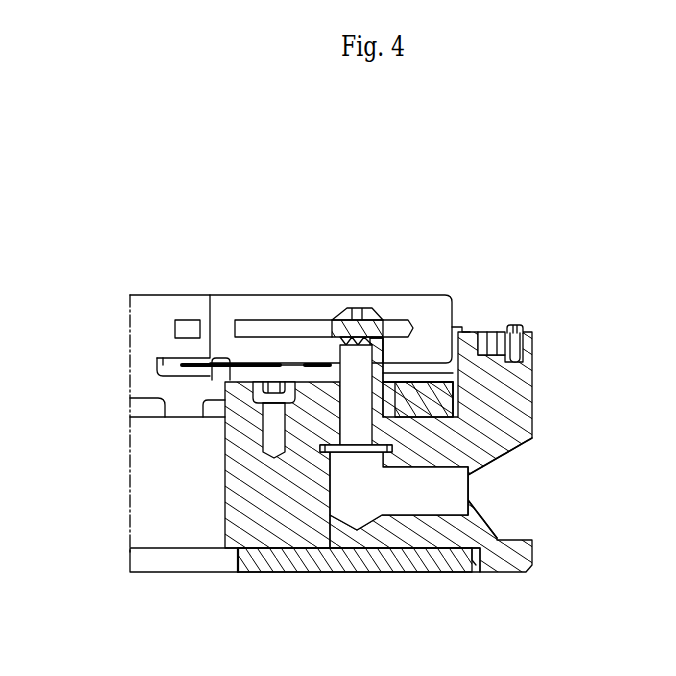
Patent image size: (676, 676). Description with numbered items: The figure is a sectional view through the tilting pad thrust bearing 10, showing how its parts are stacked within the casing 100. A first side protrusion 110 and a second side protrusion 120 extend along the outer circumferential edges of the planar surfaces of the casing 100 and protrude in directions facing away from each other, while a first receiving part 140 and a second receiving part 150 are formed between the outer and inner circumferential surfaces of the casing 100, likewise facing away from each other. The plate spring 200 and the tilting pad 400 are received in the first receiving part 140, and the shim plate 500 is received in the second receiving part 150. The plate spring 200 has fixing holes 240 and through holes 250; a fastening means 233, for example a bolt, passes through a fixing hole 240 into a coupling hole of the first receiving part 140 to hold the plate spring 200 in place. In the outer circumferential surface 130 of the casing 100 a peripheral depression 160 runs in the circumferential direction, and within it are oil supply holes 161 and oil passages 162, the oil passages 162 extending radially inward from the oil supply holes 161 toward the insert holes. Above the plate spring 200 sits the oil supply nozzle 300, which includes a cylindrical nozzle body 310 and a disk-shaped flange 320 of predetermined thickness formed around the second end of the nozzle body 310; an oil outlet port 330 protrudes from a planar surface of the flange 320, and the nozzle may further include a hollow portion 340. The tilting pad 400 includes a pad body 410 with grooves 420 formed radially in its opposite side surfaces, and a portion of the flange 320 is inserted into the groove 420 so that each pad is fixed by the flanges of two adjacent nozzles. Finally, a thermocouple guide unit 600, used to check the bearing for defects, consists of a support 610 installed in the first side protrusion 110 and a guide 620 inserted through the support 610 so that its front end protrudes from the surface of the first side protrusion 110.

The tilting pad thrust bearing 10 is at (184, 129).
The casing 100 is at (556, 448).
The first side protrusion 110 is at (470, 328).
The second side protrusion 120 is at (515, 572).
The outer circumferential surface 130 is at (533, 378).
The first receiving part 140 is at (455, 366).
The second receiving part 150 is at (468, 560).
The peripheral depression 160 is at (513, 487).
The oil supply hole 161 is at (470, 500).
The oil passage 162 is at (410, 493).
The plate spring 200 is at (245, 402).
The fastening means 233 is at (268, 438).
The fixing hole 240 is at (238, 385).
The through hole 250 is at (257, 420).
The oil supply nozzle 300 is at (55, 292).
The nozzle body 310 is at (353, 373).
The flange 320 is at (338, 312).
The oil outlet port 330 is at (380, 298).
The hollow portion 340 is at (335, 348).
The tilting pad 400 is at (432, 186).
The pad body 410 is at (432, 296).
The groove 420 is at (383, 296).
The shim plate 500 is at (250, 565).
The thermocouple guide unit 600 is at (571, 215).
The support 610 is at (488, 332).
The guide 620 is at (515, 328).